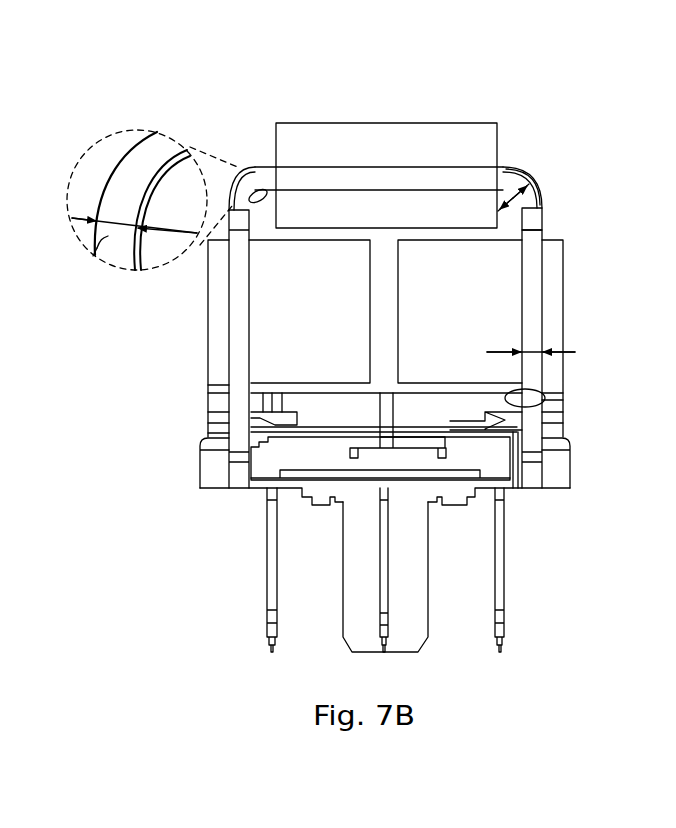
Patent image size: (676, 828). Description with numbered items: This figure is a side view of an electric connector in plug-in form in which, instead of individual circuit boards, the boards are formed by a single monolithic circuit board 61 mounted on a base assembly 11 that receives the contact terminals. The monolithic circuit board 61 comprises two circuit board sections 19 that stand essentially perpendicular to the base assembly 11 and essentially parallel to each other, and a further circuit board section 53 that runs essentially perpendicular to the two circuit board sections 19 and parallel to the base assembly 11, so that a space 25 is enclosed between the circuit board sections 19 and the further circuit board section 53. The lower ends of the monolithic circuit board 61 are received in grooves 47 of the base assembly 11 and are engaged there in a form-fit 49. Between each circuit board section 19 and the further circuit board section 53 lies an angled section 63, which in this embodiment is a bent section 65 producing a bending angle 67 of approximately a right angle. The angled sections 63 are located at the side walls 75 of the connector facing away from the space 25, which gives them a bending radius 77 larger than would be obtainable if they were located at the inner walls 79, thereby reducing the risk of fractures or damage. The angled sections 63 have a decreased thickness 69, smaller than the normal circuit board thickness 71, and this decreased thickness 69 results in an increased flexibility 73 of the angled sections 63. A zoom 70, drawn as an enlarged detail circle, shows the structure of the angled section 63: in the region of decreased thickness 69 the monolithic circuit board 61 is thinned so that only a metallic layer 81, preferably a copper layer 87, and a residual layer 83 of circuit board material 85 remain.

The base assembly 11 is at (555, 464).
The circuit board sections 19 is at (251, 310).
The space 25 is at (384, 276).
The grooves 47 is at (239, 464).
The form-fit 49 is at (222, 463).
The further circuit board section 53 is at (538, 180).
The monolithic circuit board 61 is at (100, 254).
The angled section 63 is at (385, 248).
The bent sections 65 is at (126, 143).
The bending angle 67 is at (265, 194).
The decreased thickness 69 is at (183, 262).
The zoom 70 is at (108, 138).
The circuit board thickness 71 is at (533, 352).
The increased flexibility 73 is at (550, 218).
The side walls 75 is at (227, 390).
The bending radius 77 is at (512, 210).
The inner walls 79 is at (252, 362).
The metallic layer 81 is at (87, 338).
The residual layer 83 is at (151, 268).
The circuit board material 85 is at (136, 256).
The copper layer 87 is at (110, 265).